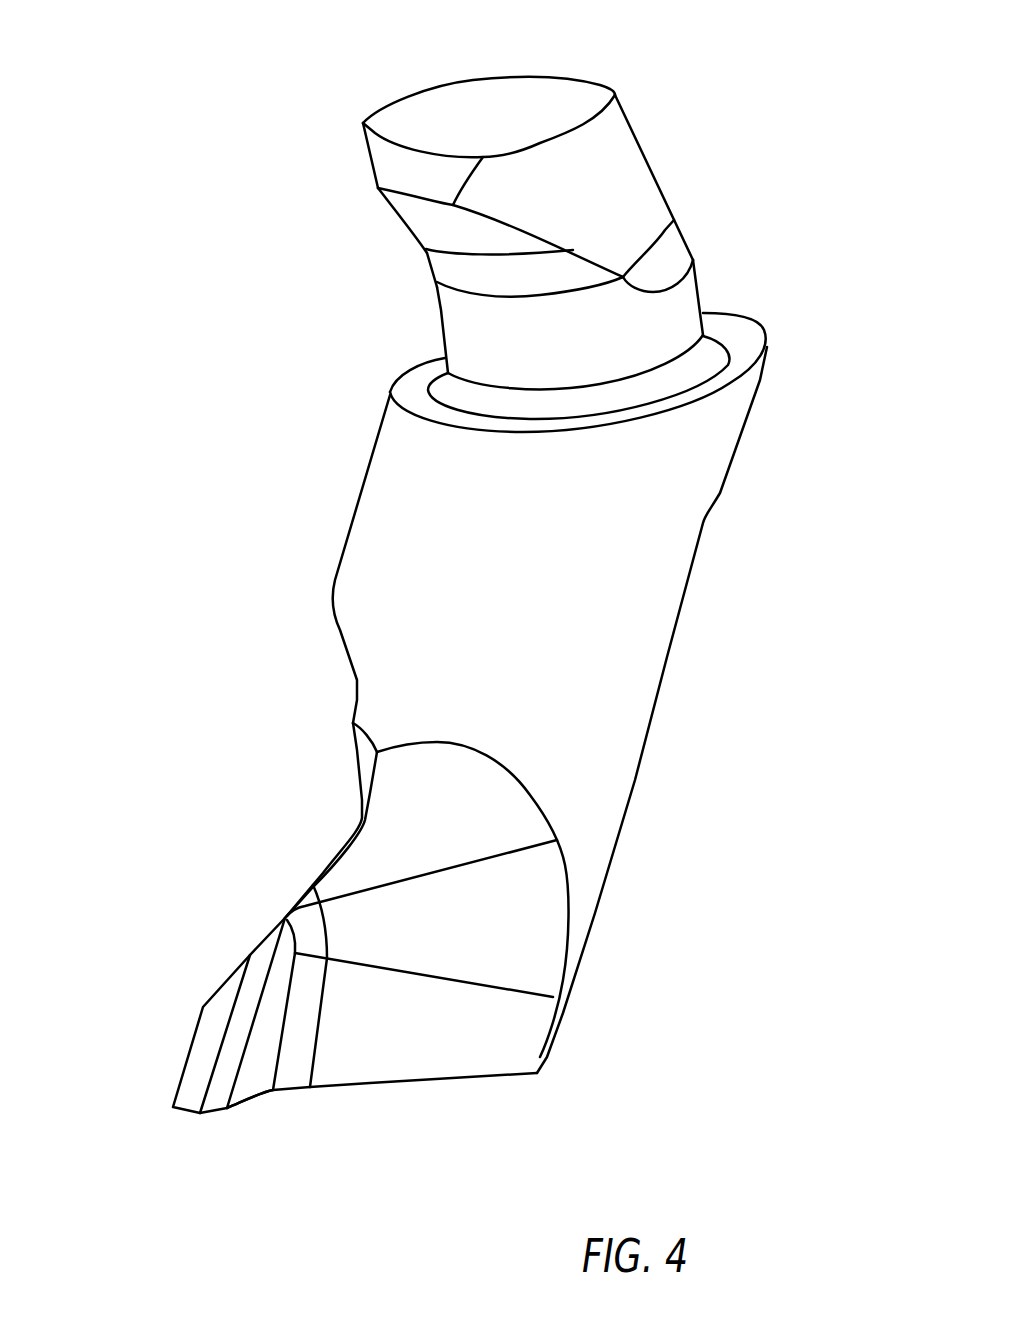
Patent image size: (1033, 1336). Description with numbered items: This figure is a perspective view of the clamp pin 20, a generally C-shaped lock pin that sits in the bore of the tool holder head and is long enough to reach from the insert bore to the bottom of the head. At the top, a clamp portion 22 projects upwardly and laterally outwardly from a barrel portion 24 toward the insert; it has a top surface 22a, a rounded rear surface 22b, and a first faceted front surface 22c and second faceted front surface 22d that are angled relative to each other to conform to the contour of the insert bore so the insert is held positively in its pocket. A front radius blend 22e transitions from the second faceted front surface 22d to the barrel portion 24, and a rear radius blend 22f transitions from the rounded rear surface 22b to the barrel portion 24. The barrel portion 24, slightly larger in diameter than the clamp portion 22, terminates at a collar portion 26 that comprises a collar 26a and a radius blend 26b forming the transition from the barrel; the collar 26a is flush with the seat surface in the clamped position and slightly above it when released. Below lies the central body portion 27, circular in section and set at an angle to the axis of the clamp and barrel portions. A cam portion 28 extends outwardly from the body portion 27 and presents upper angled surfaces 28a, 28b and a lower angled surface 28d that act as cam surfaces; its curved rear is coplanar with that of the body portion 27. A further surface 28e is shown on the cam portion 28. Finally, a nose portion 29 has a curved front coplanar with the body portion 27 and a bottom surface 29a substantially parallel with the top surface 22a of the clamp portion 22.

The clamp pin 20 is at (833, 92).
The clamp portion 22 is at (357, 186).
The top surface 22a is at (517, 89).
The rounded rear surface 22b is at (622, 150).
The first faceted front surface 22c is at (377, 158).
The second faceted front surface 22d is at (407, 210).
The front radius blend 22e is at (440, 255).
The rear radius blend 22f is at (672, 255).
The barrel portion 24 is at (422, 310).
The collar portion 26 is at (405, 400).
The collar 26a is at (748, 341).
The radius blend 26b is at (443, 388).
The central body portion 27 is at (323, 528).
The cam portion 28 is at (247, 885).
The upper angled surface 28a is at (363, 753).
The upper angled surface 28b is at (497, 812).
The lower angled surface 28d is at (533, 928).
The cutting head bottom edge 28e is at (515, 1040).
The nose portion 29 is at (163, 1056).
The bottom surface 29a is at (380, 1088).